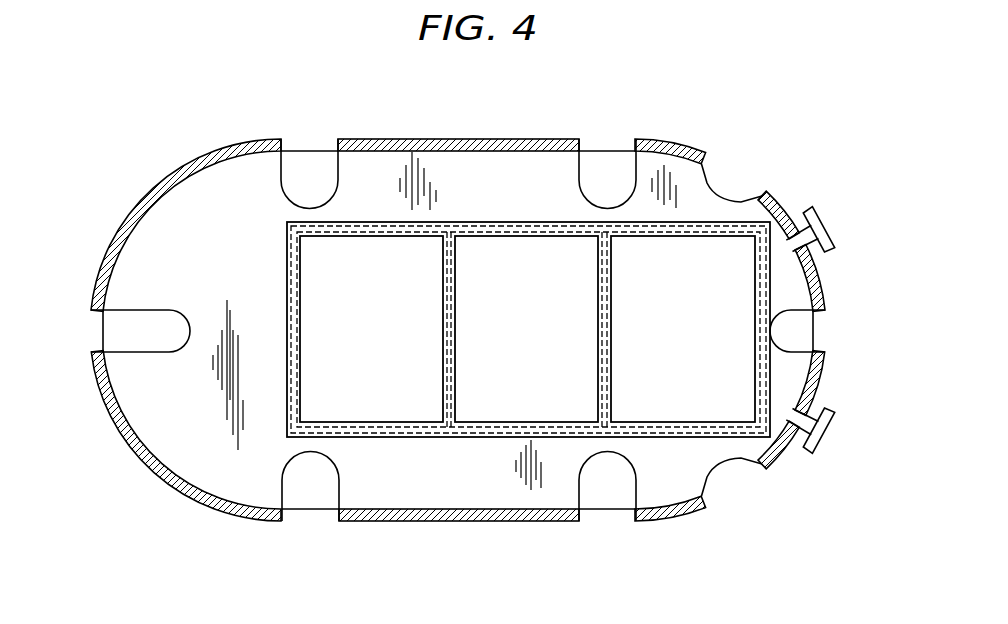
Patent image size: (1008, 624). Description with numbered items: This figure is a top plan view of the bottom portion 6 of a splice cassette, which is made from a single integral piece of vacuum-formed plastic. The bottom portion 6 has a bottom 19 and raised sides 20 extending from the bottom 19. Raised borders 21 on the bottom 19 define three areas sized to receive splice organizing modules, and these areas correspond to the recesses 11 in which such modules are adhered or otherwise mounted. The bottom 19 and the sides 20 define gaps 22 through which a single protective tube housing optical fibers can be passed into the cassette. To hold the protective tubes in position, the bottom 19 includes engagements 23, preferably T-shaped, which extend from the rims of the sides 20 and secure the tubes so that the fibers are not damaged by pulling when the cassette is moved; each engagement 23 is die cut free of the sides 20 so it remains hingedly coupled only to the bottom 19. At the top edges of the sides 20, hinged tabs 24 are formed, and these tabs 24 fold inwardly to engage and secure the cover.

The bottom portion 6 is at (356, 103).
The recesses 11 is at (697, 347).
The bottom 19 is at (451, 168).
The raised sides 20 is at (484, 521).
The raised borders 21 is at (672, 437).
The gaps 22 is at (730, 165).
The engagements 23 is at (845, 220).
The hinged tabs 24 is at (115, 333).